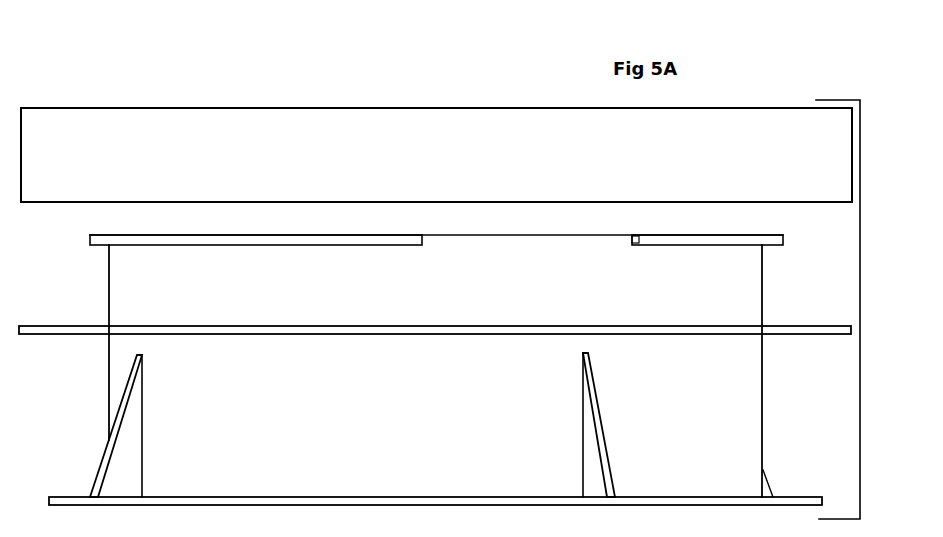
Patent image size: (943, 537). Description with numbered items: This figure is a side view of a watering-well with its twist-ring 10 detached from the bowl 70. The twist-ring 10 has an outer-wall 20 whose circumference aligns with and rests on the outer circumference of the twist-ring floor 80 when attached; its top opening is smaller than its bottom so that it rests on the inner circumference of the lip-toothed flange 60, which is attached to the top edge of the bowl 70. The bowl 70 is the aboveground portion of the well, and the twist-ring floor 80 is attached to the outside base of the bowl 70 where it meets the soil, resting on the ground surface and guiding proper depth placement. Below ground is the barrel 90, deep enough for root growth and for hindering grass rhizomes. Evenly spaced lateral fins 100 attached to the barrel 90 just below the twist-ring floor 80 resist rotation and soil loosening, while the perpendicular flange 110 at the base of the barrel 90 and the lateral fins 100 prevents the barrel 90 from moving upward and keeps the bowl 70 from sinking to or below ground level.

The twist-ring 10 is at (125, 107).
The outer-wall 20 is at (118, 152).
The lip-toothed flange 60 is at (712, 240).
The bowl 70 is at (165, 298).
The twist-ring floor 80 is at (794, 337).
The barrel 90 is at (180, 350).
The lateral fin 100 is at (124, 391).
The perpendicular flange 110 is at (80, 495).